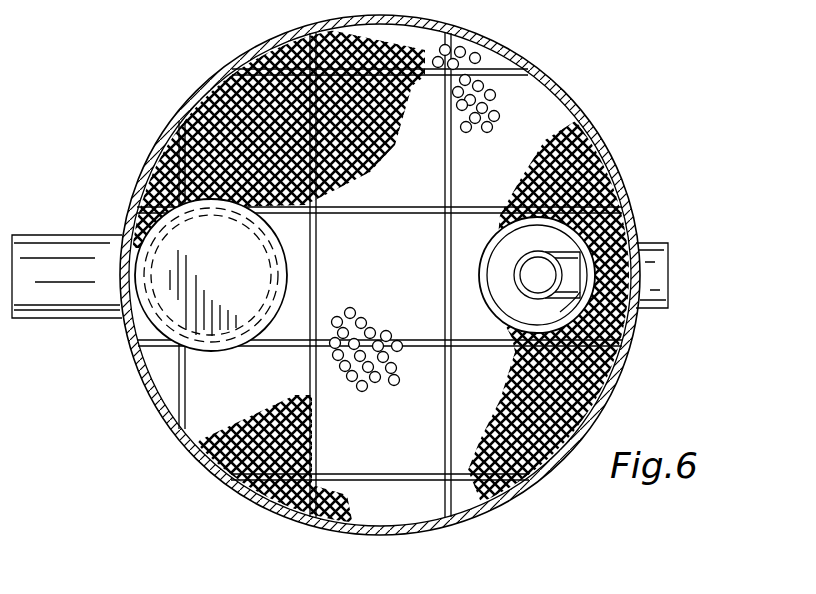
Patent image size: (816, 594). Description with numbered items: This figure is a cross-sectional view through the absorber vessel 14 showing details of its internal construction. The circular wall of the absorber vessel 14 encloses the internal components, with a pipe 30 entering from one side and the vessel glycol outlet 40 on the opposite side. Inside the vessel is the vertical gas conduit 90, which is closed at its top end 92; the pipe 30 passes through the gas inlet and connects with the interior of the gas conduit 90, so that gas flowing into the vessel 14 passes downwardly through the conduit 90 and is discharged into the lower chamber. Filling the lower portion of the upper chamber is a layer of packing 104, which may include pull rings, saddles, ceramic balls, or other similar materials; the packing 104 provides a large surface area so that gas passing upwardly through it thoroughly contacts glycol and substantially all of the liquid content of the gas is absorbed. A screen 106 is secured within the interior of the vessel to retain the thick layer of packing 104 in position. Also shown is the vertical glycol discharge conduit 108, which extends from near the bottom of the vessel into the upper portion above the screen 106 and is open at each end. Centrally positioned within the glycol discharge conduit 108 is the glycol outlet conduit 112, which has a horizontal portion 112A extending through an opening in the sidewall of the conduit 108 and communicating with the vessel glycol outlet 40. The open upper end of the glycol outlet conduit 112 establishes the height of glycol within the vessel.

The absorber vessel 14 is at (597, 143).
The pipe 30 is at (106, 244).
The vessel glycol outlet 40 is at (655, 246).
The vertical gas conduit 90 is at (250, 262).
The top end 92 is at (172, 305).
The packing 104 is at (498, 178).
The screen 106 is at (296, 34).
The glycol discharge conduit 108 is at (484, 270).
The glycol outlet conduit 112 is at (520, 262).
The horizontal portion 112A is at (560, 312).